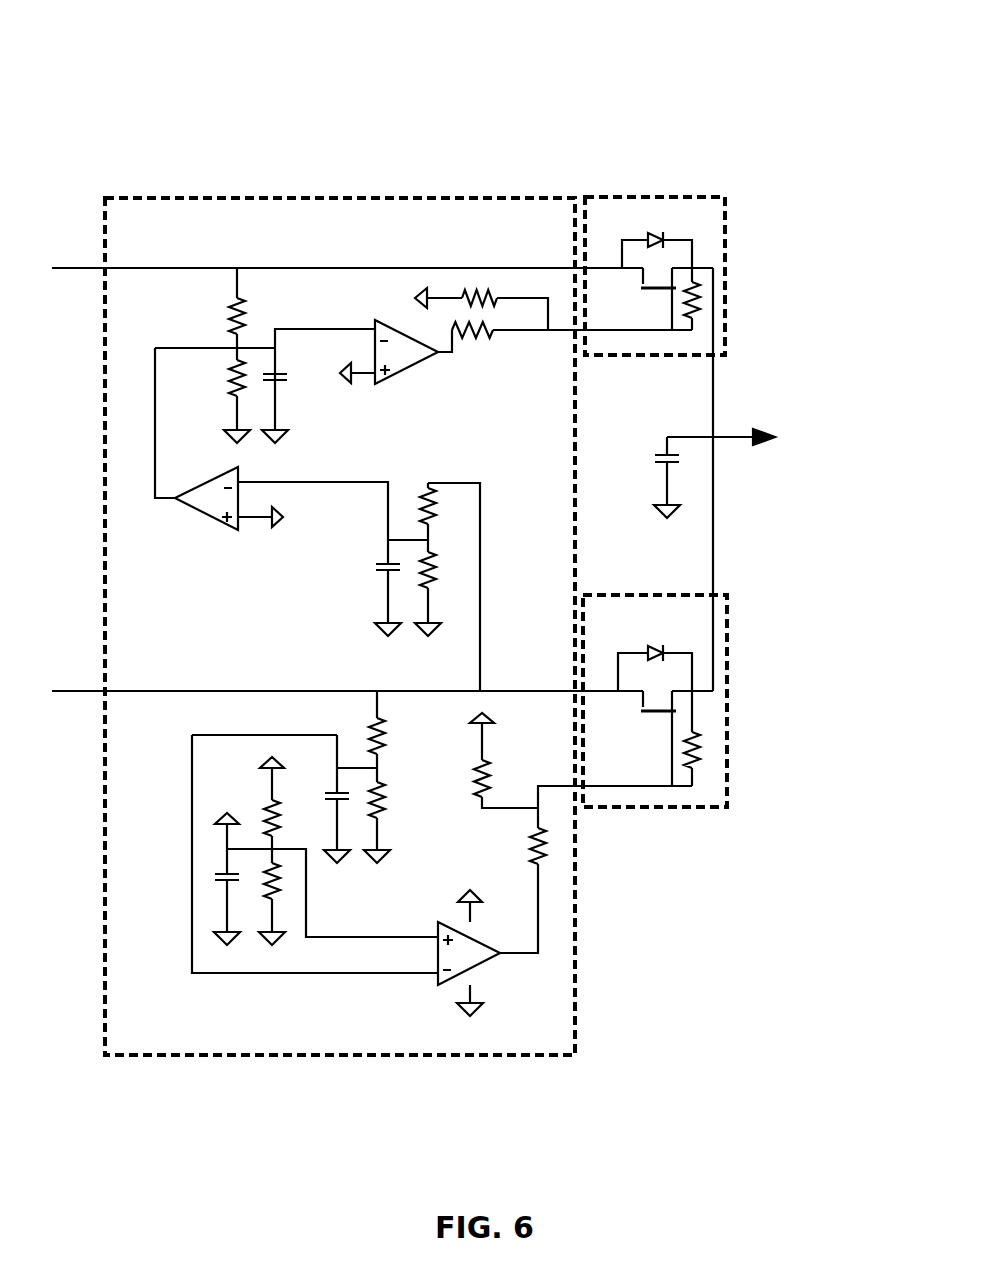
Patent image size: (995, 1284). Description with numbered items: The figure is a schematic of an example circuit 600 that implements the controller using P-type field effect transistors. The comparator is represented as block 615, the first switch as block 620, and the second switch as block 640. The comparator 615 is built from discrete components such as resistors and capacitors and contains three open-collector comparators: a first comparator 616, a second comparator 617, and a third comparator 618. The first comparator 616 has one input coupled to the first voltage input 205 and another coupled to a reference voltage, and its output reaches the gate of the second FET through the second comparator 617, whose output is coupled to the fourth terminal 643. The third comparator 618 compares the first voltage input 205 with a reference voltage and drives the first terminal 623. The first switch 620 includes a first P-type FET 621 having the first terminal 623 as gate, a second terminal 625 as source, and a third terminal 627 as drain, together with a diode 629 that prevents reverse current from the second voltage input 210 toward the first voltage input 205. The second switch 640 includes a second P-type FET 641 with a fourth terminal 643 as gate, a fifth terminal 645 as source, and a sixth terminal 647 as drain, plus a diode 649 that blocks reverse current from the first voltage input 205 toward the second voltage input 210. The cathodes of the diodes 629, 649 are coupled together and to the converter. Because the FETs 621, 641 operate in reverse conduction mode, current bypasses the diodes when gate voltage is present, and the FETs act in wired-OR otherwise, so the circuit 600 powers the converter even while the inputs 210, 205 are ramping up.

The circuit 600 is at (74, 84).
The second voltage input 210 is at (63, 232).
The first voltage input 205 is at (63, 652).
The comparator 615 is at (495, 197).
The first comparator 616 is at (222, 525).
The second comparator 617 is at (386, 384).
The third comparator 618 is at (440, 922).
The first switch 620 is at (628, 594).
The first P-type field effect transistor 621 is at (676, 678).
The first terminal 623 is at (662, 713).
The second terminal 625 is at (678, 708).
The third terminal 627 is at (640, 706).
The diode 629 is at (656, 652).
The second switch 640 is at (655, 197).
The second P-type field effect transistor 641 is at (676, 254).
The fourth terminal 643 is at (662, 290).
The fifth terminal 645 is at (678, 284).
The sixth terminal 647 is at (640, 282).
The diode 649 is at (656, 239).